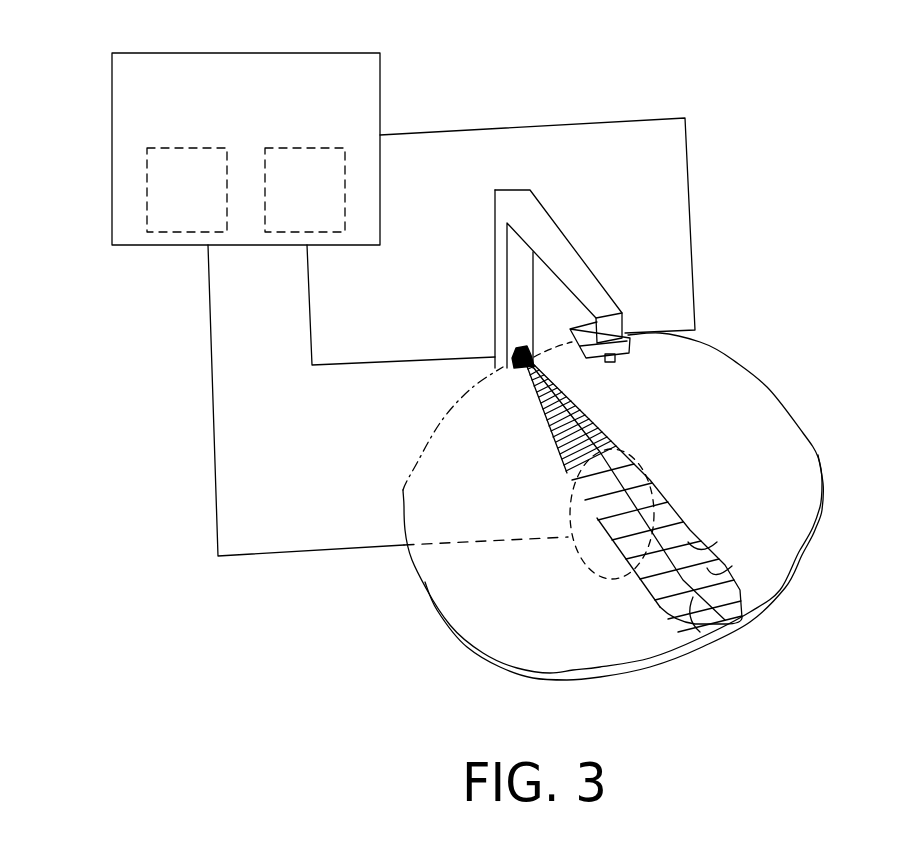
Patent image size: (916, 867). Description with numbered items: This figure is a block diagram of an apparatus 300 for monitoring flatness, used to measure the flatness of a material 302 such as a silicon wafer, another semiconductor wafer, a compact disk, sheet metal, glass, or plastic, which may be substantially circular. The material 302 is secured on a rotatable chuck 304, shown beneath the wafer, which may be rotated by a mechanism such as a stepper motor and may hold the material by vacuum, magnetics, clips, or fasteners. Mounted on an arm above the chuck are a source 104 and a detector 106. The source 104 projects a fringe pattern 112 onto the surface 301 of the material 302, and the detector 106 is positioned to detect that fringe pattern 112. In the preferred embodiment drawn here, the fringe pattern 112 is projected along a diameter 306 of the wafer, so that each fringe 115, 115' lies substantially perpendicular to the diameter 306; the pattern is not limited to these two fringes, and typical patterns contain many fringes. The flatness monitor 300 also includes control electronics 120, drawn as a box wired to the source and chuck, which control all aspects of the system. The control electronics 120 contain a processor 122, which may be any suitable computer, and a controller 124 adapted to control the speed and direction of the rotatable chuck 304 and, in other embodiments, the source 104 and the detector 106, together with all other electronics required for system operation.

The control electronics 120 is at (112, 88).
The processor 122 is at (147, 163).
The controller 124 is at (307, 147).
The apparatus for monitoring flatness 300 is at (672, 63).
The material 302 is at (777, 393).
The surface 301 is at (790, 527).
The source 104 is at (521, 357).
The detector 106 is at (618, 357).
The rotatable chuck 304 is at (568, 493).
The fringe pattern 112 is at (687, 513).
The fringe 115 is at (731, 530).
The fringe 115' is at (752, 557).
The diameter 306 is at (697, 602).